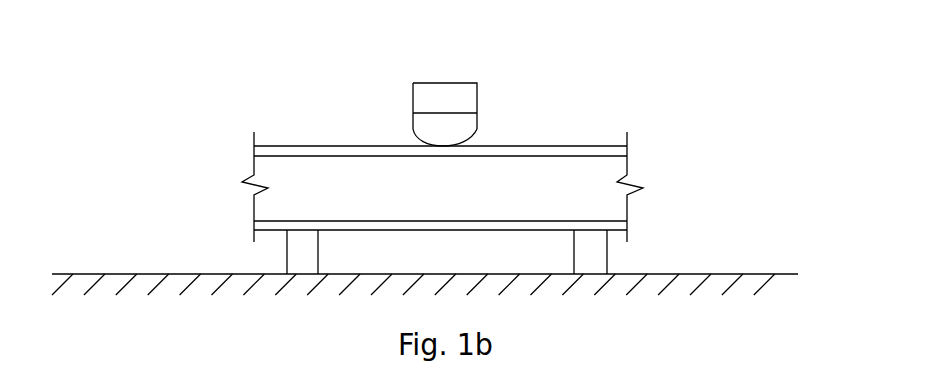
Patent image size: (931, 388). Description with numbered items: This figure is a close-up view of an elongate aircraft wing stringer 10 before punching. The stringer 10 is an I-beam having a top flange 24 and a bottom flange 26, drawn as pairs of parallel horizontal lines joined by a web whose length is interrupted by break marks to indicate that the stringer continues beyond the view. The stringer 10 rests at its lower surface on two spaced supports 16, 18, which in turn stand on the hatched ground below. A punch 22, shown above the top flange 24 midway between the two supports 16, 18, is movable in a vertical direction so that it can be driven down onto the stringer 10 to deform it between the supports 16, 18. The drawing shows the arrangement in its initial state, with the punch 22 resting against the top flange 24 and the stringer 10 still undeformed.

The stringer 10 is at (565, 198).
The support 16 is at (310, 255).
The support 18 is at (595, 250).
The punch 22 is at (445, 105).
The top flange 24 is at (292, 152).
The bottom flange 26 is at (265, 228).